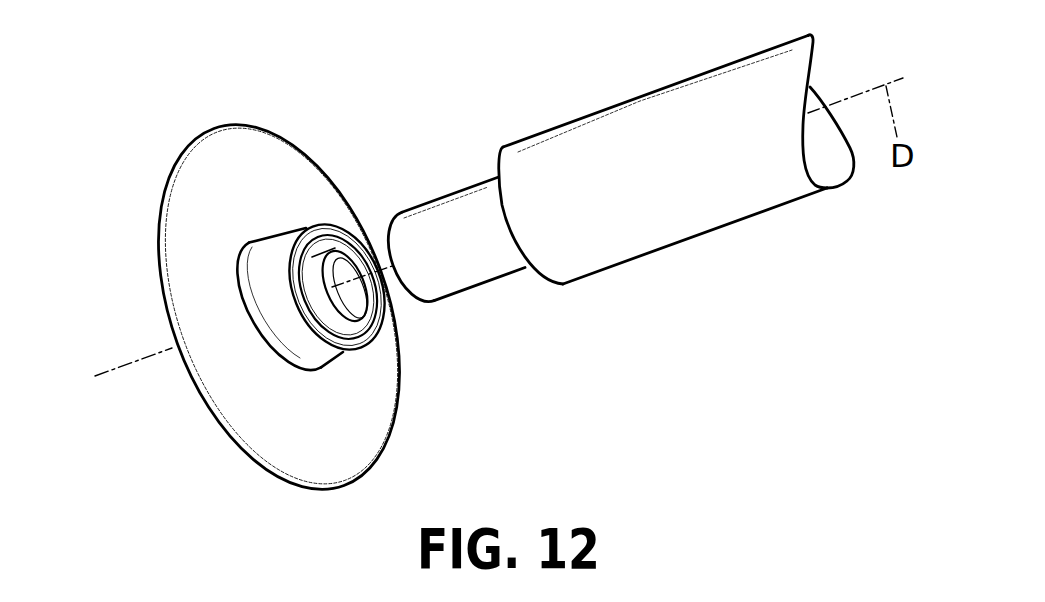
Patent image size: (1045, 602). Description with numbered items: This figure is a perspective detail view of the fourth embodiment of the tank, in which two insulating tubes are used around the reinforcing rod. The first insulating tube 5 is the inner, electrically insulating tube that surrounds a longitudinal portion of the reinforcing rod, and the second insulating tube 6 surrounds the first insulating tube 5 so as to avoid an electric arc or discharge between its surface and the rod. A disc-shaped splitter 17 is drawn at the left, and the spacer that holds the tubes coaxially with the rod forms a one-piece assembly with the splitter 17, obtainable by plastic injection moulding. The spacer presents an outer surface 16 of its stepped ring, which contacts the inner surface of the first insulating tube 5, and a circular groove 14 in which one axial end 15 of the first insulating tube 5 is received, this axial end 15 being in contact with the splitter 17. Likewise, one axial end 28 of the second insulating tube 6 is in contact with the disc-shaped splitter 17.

The first insulating tube 5 is at (477, 259).
The second insulating tube 6 is at (587, 146).
The circular groove 14 is at (323, 311).
The axial end of the first insulating tube 15 is at (423, 303).
The outer surface of the ring 16 is at (267, 270).
The disc-shaped splitter 17 is at (213, 176).
The axial end of the second insulating tube 28 is at (500, 155).